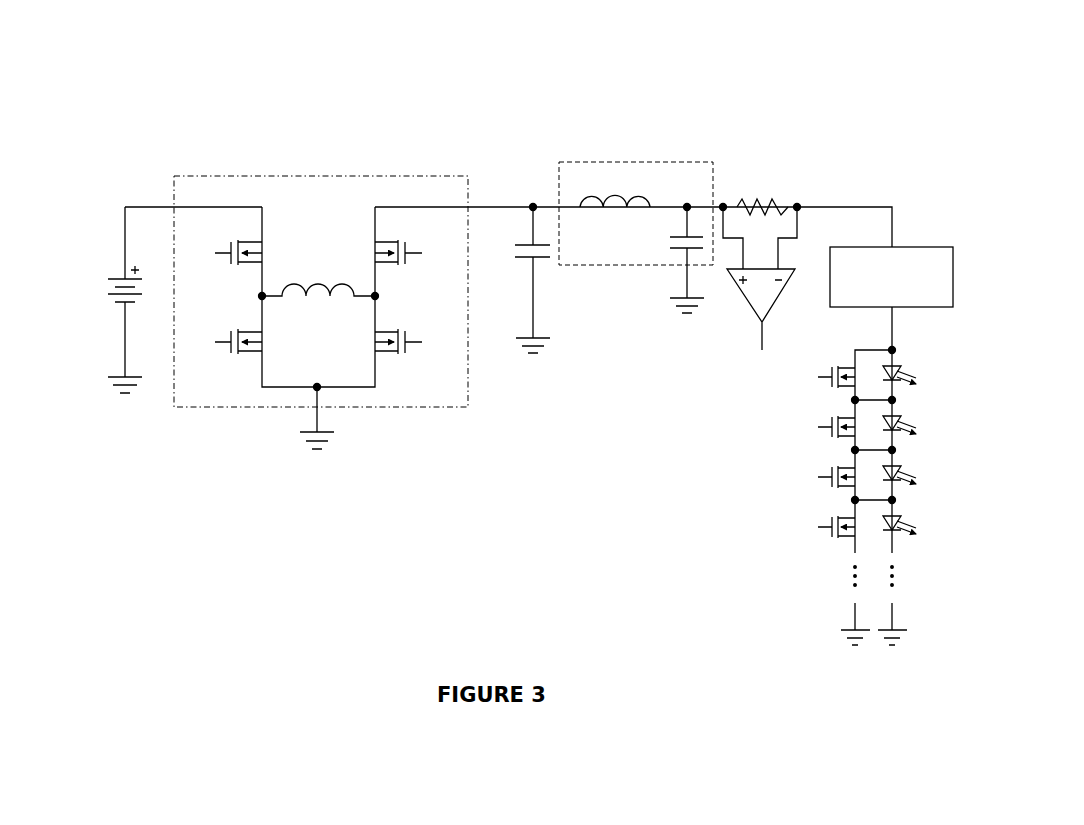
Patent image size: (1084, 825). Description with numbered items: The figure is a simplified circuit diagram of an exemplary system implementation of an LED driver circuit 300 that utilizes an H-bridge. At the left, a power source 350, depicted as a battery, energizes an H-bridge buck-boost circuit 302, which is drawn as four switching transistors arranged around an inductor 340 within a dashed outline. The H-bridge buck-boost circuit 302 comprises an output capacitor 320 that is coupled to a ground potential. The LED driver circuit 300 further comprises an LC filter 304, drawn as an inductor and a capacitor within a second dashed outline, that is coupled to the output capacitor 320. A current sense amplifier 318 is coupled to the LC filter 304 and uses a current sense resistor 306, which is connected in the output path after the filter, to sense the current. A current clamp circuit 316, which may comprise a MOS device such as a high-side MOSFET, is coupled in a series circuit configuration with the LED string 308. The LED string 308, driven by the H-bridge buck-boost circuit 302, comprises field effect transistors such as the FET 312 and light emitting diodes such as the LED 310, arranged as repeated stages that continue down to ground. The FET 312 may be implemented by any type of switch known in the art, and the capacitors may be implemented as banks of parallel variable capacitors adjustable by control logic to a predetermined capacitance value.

The LED driver circuit 300 is at (509, 53).
The H-bridge buck-boost circuit 302 is at (220, 420).
The LC filter 304 is at (662, 158).
The current sense resistor 306 is at (765, 181).
The LED string 308 is at (859, 520).
The LED 310 is at (900, 364).
The field effect transistor 312 is at (820, 380).
The current clamp circuit 316 is at (925, 246).
The current sense amplifier 318 is at (745, 301).
The output capacitor 320 is at (538, 262).
The inductor 340 is at (320, 281).
The power source 350 is at (105, 290).